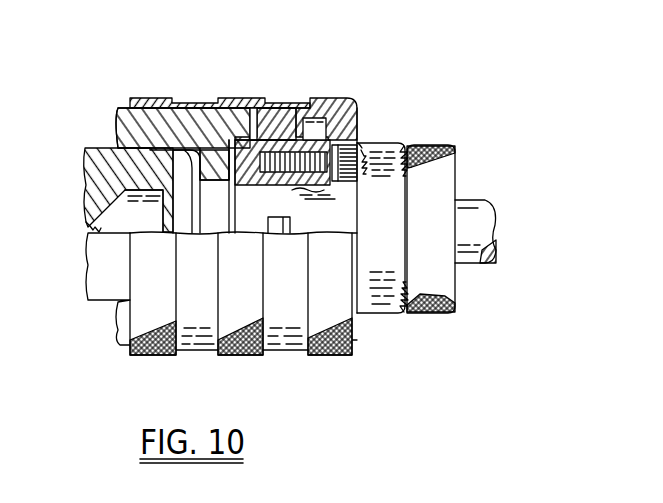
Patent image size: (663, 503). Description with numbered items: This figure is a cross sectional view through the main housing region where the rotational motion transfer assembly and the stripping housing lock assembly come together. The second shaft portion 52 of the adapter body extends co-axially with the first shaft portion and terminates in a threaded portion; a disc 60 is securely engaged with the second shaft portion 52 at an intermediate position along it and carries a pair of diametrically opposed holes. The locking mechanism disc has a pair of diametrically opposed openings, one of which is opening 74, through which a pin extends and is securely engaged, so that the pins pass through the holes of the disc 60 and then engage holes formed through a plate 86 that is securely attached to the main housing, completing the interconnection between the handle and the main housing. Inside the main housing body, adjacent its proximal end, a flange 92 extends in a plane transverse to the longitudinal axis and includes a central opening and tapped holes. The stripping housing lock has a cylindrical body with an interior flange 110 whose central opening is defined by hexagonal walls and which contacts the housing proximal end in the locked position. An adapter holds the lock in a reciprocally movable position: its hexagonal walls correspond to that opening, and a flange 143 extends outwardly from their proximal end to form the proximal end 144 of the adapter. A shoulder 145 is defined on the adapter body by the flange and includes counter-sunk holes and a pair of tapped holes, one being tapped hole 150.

The second shaft portion 52 is at (468, 220).
The disc 60 is at (382, 313).
The opening 74 is at (452, 315).
The plate 86 is at (238, 100).
The flange 92 is at (182, 100).
The flange 110 is at (270, 100).
The flange 143 is at (362, 113).
The proximal end 144 is at (362, 122).
The shoulder 145 is at (354, 102).
The tapped hole 150 is at (267, 162).